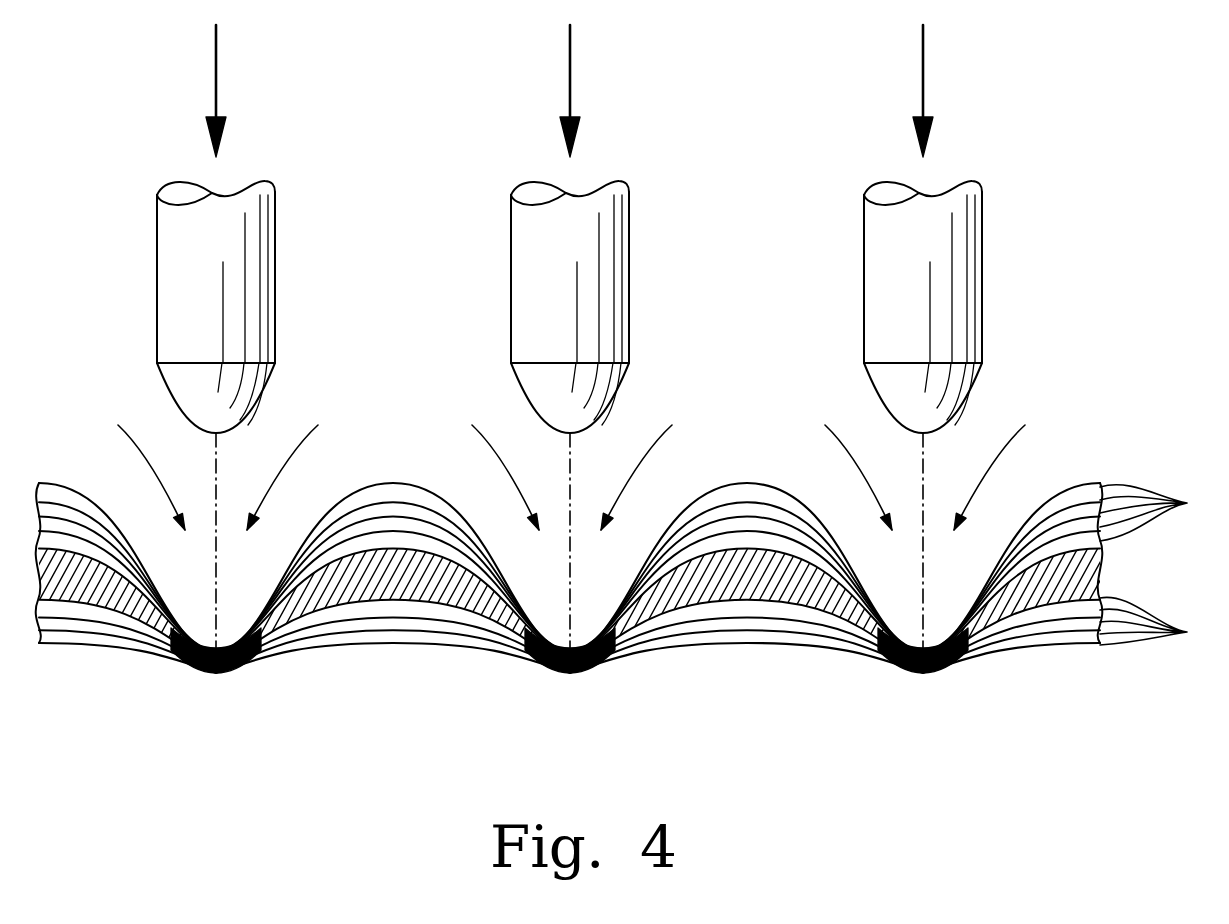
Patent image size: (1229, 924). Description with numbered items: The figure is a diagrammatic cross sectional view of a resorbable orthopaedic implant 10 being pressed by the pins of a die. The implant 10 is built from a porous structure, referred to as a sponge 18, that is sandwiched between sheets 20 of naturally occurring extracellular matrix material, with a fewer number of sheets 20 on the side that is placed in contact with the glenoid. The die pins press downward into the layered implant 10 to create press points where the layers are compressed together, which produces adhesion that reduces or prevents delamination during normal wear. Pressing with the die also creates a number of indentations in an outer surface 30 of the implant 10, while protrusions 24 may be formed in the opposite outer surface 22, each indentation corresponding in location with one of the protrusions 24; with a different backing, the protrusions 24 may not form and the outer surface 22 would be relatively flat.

The resorbable orthopaedic implant 10 is at (612, 529).
The porous structure (sponge) 18 is at (1103, 565).
The sheets of naturally occurring extracellular matrix material 20 is at (631, 578).
The outer surface 22 is at (393, 643).
The protrusions 24 is at (240, 695).
The outer surface 30 is at (393, 483).